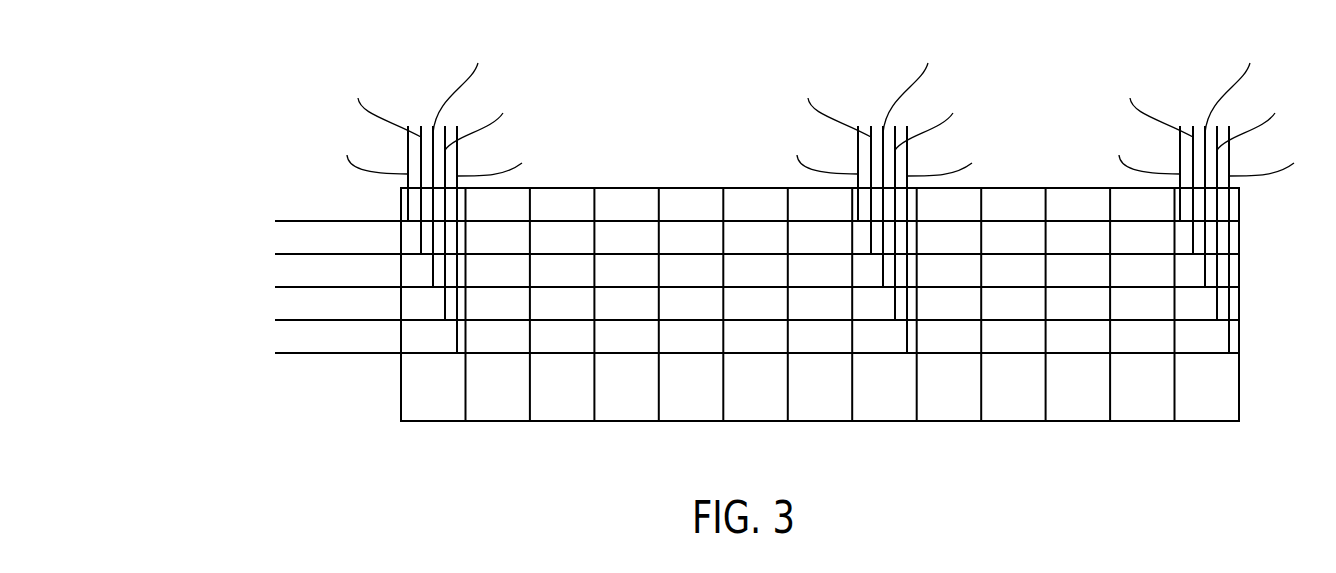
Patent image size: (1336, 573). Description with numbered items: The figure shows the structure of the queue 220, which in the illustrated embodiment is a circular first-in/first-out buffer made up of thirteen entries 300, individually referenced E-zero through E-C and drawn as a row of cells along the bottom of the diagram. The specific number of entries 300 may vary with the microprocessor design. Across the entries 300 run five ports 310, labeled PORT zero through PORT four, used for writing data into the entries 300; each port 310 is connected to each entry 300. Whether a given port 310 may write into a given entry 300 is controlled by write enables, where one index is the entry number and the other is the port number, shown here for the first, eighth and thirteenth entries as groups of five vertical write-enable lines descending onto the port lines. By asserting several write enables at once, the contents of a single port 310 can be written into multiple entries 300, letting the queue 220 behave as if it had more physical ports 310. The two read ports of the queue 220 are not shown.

The queue 220 is at (277, 75).
The entries 300 is at (1238, 433).
The ports 310 is at (262, 184).